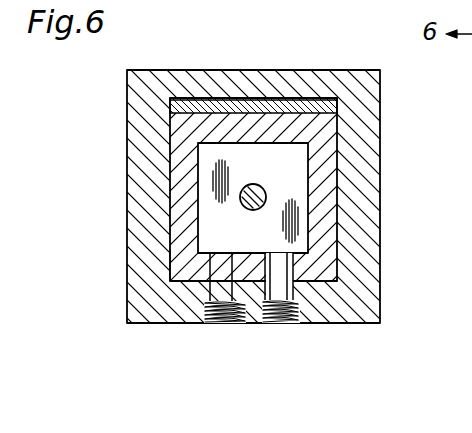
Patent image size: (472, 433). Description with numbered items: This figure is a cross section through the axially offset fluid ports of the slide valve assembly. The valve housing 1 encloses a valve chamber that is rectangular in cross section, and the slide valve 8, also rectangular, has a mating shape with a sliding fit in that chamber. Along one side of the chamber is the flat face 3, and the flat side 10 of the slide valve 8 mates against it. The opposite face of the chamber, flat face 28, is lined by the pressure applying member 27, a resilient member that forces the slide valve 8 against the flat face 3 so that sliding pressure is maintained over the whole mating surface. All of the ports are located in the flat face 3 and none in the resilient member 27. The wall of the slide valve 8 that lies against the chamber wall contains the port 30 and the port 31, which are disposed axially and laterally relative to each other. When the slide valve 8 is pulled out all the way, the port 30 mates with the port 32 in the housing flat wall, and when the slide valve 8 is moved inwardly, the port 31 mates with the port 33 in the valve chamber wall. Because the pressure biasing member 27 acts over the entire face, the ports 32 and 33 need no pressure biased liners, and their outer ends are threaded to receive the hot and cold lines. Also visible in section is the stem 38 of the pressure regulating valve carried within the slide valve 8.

The valve housing 1 is at (382, 120).
The flat face 3 is at (188, 279).
The slide valve 8 is at (182, 160).
The flat side 10 is at (326, 283).
The pressure applying member 27 is at (278, 104).
The flat face 28 is at (200, 100).
The port 30 is at (225, 263).
The port 31 is at (288, 263).
The port 32 is at (233, 295).
The port 33 is at (282, 298).
The stem 38 is at (263, 190).